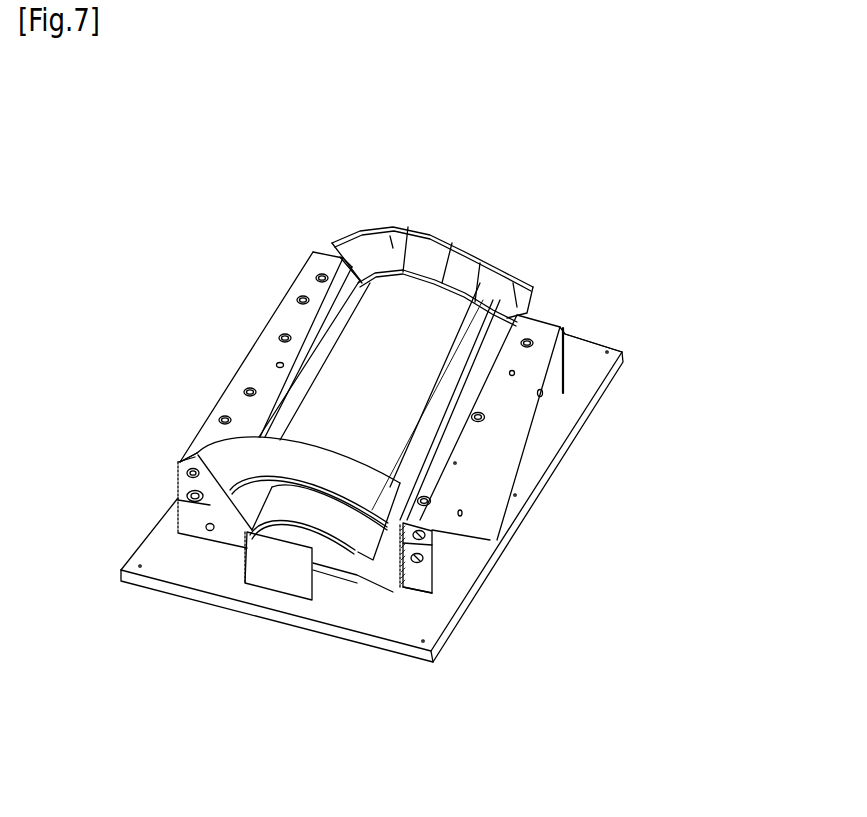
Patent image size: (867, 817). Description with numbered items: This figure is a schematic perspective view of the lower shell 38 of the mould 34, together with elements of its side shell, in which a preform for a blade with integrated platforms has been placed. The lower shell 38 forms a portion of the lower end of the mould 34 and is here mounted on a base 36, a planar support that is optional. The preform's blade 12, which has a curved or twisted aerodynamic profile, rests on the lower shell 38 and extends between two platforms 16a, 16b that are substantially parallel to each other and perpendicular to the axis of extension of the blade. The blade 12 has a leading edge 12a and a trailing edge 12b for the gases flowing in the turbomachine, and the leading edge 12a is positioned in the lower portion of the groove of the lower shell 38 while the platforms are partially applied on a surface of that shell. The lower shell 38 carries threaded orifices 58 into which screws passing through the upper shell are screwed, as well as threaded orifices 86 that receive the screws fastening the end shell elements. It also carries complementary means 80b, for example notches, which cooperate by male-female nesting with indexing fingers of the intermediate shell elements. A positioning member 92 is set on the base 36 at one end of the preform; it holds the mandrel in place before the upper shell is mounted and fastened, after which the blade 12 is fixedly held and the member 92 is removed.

The blade 12 is at (420, 303).
The leading edge 12a is at (320, 360).
The trailing edge 12b is at (323, 332).
The platform 16a is at (357, 556).
The platform 16b is at (391, 243).
The mould 34 is at (567, 333).
The base 36 is at (627, 384).
The lower shell 38 is at (433, 596).
The threaded orifices 58 is at (484, 418).
The complementary means 80b is at (177, 488).
The threaded orifices 86 is at (222, 547).
The positioning member 92 is at (285, 578).